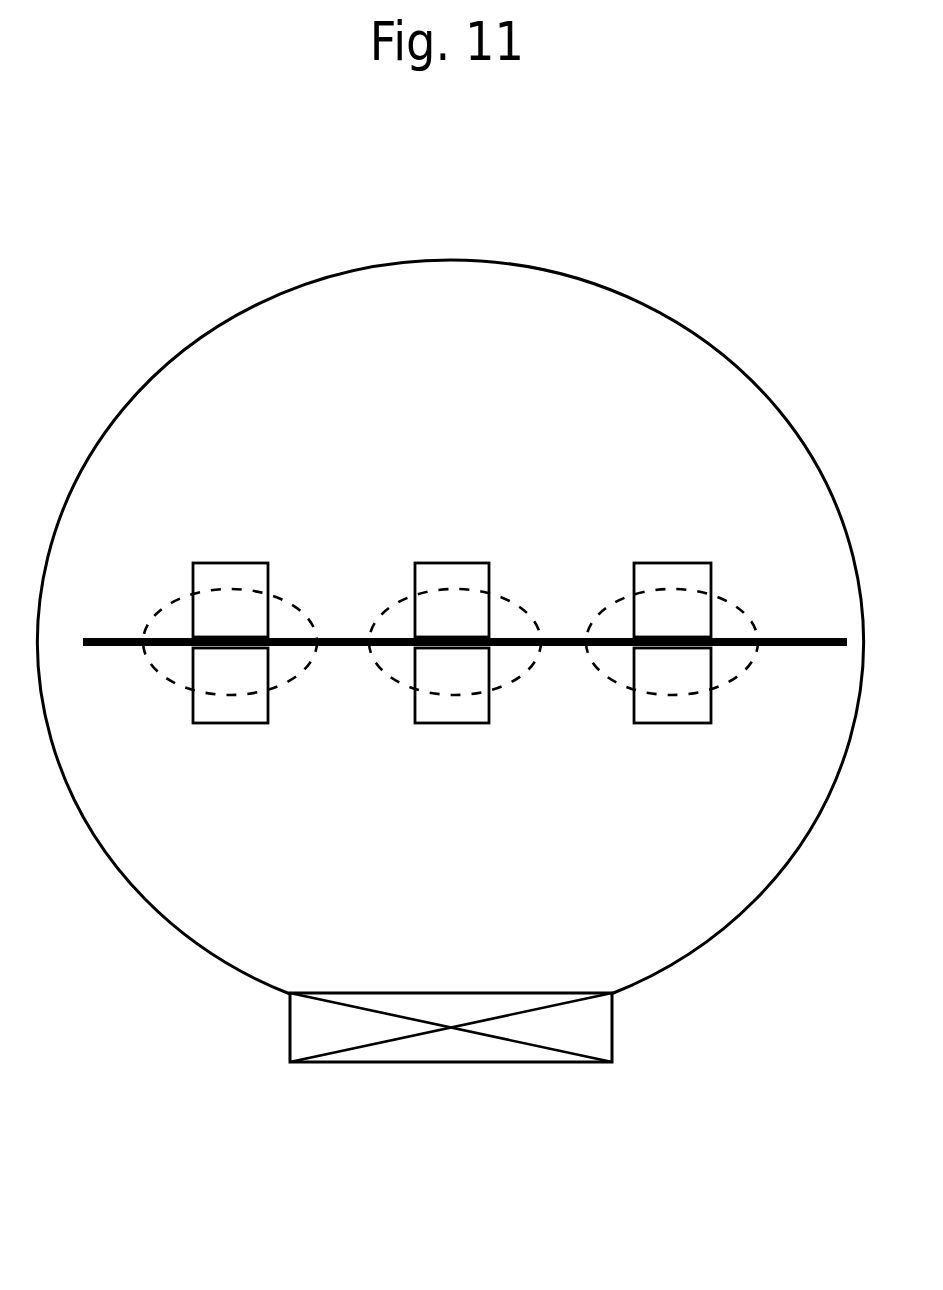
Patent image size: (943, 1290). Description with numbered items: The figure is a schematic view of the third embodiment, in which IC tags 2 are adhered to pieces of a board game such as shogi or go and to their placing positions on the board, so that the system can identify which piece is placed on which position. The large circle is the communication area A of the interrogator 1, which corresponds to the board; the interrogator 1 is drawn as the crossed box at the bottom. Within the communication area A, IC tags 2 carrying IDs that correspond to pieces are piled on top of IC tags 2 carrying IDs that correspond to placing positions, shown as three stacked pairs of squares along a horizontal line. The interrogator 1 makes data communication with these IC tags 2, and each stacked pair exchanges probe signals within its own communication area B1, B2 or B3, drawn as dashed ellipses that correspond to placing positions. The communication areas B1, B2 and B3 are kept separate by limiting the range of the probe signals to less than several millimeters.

The communication area A is at (484, 305).
The interrogator 1 is at (453, 1050).
The IC tag 2 is at (227, 572).
The communication area B1 is at (168, 622).
The communication area B2 is at (396, 620).
The communication area B3 is at (615, 622).